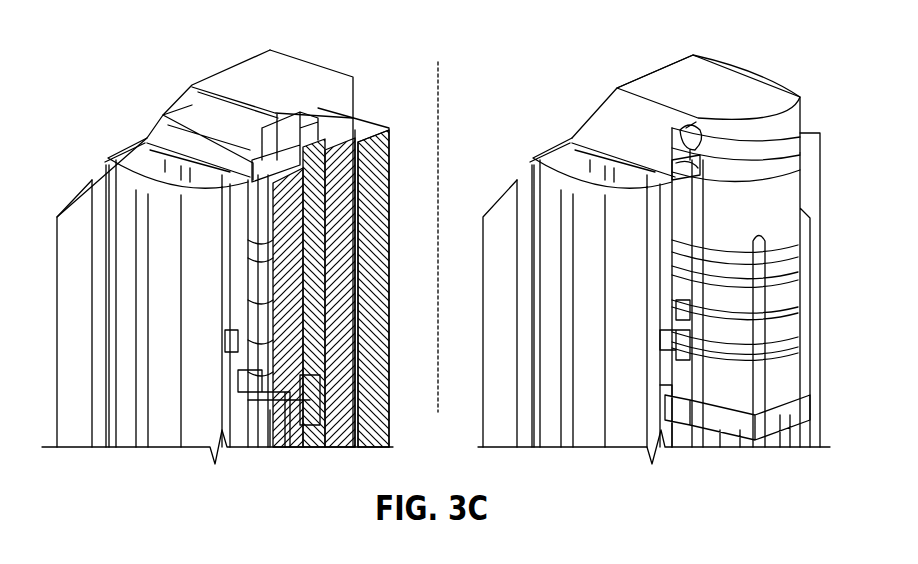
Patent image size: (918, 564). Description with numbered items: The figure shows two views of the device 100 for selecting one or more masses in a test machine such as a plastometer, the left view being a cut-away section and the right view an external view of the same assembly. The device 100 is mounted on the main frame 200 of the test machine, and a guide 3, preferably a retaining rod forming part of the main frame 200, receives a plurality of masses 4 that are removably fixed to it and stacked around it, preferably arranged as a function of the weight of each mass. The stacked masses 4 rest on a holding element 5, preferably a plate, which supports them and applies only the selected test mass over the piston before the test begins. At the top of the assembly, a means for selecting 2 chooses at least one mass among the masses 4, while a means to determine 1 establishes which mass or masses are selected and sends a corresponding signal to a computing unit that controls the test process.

The device 100 is at (393, 90).
The main frame 200 is at (142, 118).
The means to determine 1 is at (678, 135).
The means for selecting 2 is at (678, 162).
The guide 3 is at (373, 180).
The masses 4 is at (375, 243).
The holding element 5 is at (660, 385).